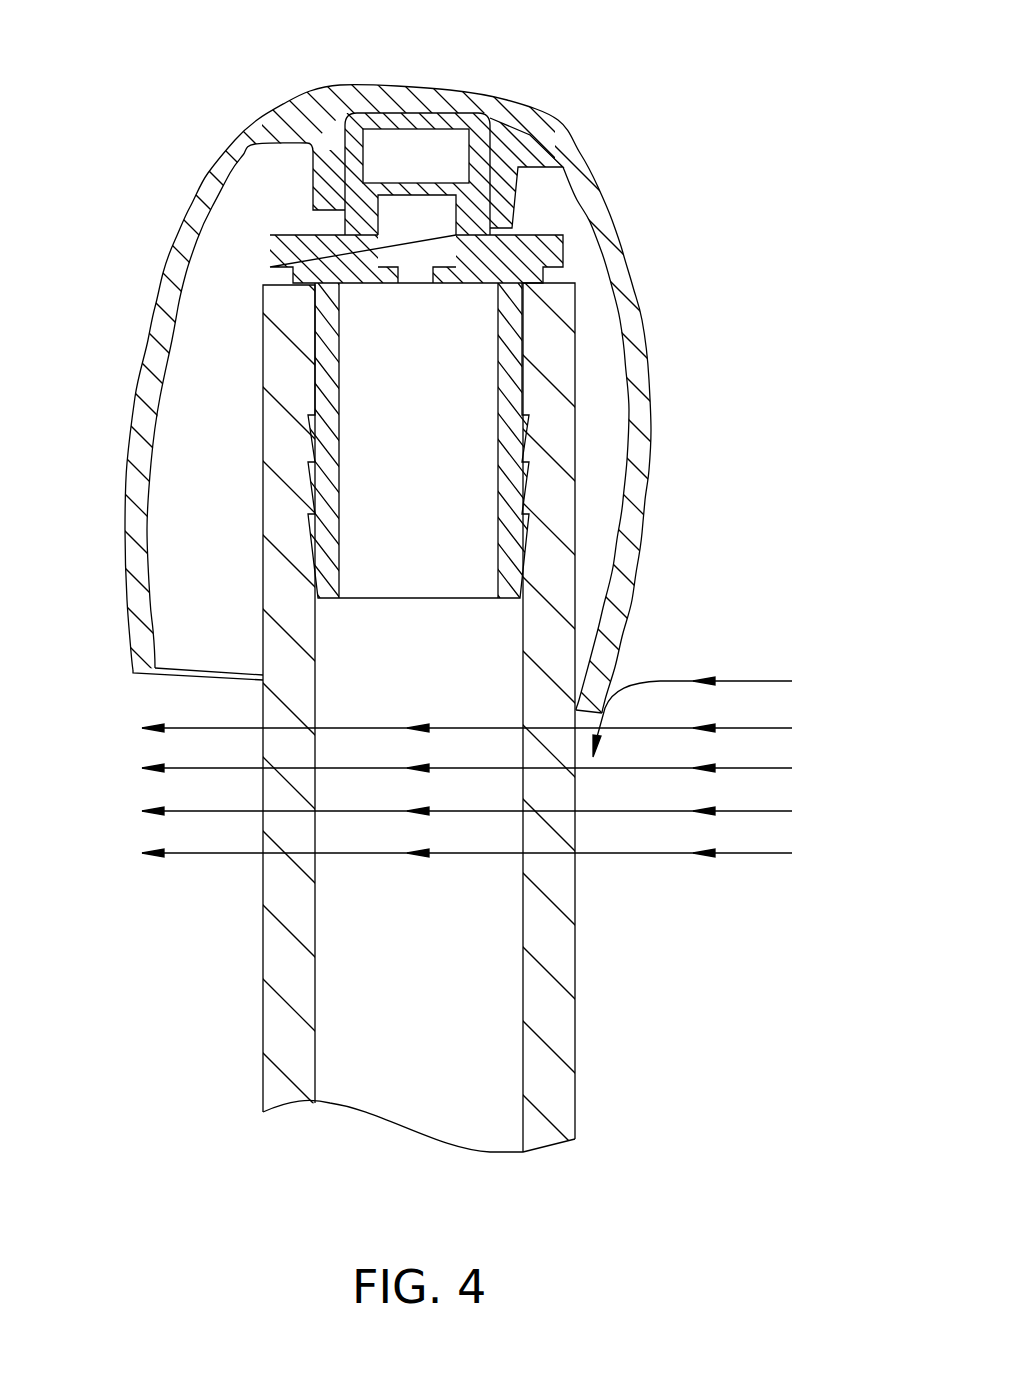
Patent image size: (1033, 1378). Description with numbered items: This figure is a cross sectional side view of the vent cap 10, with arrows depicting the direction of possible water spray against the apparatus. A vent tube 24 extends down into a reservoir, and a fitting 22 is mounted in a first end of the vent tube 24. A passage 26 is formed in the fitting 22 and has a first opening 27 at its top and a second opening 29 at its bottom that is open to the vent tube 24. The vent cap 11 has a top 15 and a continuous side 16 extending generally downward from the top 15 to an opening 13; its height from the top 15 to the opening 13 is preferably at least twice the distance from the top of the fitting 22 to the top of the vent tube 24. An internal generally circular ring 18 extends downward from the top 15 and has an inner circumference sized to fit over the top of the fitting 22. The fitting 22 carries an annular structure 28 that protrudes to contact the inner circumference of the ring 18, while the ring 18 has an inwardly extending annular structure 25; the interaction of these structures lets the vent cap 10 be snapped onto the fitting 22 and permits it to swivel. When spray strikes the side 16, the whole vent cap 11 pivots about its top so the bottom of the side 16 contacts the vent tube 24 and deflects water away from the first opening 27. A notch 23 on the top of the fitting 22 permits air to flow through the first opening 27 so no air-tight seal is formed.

The vent cap 10 is at (172, 136).
The vent cap 11 is at (649, 380).
The opening 13 is at (180, 677).
The top 15 is at (452, 100).
The side 16 is at (163, 283).
The ring 18 is at (307, 182).
The fitting 22 is at (542, 232).
The notch 23 is at (445, 128).
The vent tube 24 is at (577, 968).
The annular structure 25 is at (345, 195).
The passage 26 is at (442, 447).
The first opening 27 is at (463, 133).
The annular structure 28 is at (503, 137).
The second opening 29 is at (467, 600).